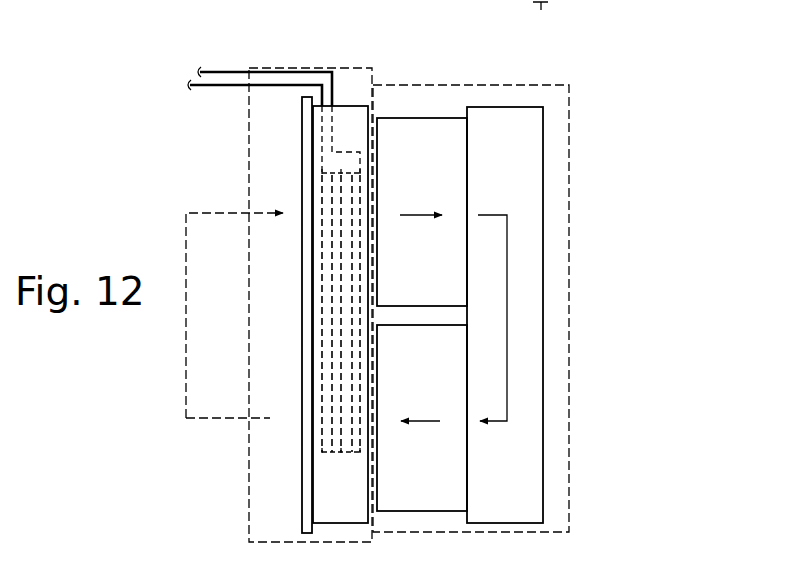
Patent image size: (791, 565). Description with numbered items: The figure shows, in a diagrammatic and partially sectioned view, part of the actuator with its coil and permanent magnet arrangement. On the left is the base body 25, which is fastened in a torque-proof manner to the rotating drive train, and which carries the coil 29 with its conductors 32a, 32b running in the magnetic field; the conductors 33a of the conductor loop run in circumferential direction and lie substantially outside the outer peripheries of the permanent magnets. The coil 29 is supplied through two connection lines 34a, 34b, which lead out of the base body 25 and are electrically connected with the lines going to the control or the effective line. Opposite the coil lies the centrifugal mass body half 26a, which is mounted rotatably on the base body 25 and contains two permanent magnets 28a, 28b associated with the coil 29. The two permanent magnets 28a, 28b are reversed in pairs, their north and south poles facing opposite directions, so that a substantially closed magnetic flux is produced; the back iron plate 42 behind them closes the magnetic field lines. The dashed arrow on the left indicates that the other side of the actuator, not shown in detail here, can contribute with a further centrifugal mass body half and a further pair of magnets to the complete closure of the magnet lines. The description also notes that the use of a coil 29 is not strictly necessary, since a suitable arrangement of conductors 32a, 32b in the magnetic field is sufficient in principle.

The base body 25 is at (303, 63).
The centrifugal mass body half 26a is at (540, 85).
The permanent magnet 28a is at (408, 465).
The permanent magnet 28b is at (397, 130).
The coil 29 is at (338, 392).
The conductor 32a is at (337, 438).
The conductor 32b is at (337, 187).
The conductor of the conductor loop 33a is at (633, 0).
The connection line 34a is at (200, 90).
The connection line 34b is at (207, 70).
The back iron plate 42 is at (523, 288).